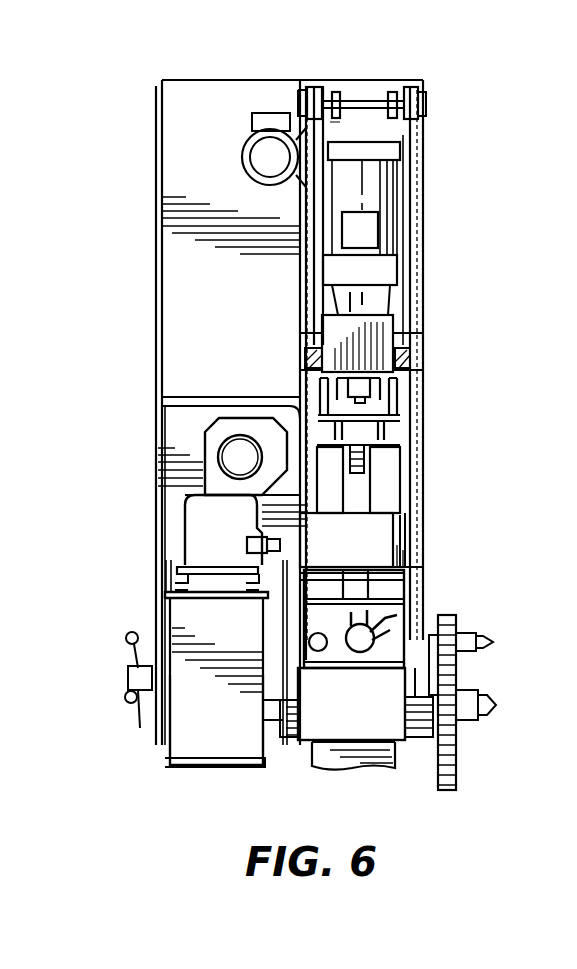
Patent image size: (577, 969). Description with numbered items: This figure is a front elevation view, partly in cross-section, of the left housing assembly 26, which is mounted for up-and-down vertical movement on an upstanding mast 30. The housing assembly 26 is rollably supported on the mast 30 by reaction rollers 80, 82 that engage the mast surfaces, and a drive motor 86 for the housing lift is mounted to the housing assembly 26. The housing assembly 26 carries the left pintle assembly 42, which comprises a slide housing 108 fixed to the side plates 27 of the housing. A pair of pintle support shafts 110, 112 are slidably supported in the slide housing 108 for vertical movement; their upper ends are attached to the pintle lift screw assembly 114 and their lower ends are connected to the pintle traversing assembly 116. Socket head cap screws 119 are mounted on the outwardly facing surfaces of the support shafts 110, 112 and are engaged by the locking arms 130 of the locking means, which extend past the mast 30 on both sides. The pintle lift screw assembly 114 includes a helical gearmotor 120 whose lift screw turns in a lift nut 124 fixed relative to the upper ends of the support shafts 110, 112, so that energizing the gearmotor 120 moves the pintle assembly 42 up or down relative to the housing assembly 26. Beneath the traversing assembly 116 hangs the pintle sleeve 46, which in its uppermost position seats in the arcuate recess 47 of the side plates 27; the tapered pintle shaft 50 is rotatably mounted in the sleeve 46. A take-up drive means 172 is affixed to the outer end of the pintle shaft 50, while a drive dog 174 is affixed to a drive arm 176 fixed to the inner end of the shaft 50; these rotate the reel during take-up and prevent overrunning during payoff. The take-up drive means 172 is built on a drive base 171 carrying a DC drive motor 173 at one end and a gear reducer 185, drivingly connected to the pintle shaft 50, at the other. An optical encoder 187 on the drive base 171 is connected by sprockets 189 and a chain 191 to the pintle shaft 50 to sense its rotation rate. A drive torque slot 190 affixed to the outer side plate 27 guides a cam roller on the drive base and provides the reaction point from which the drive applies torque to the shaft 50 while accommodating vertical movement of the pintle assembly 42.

The left housing assembly 26 is at (467, 292).
The side plates 27 is at (422, 240).
The mast 30 is at (392, 130).
The left pintle assembly 42 is at (477, 551).
The pintle sleeve 46 is at (350, 720).
The arcuate recess 47 is at (410, 682).
The pintle shaft 50 is at (488, 707).
The reaction roller 80 is at (360, 100).
The reaction roller 82 is at (310, 88).
The drive motor 86 is at (242, 158).
The slide housing 108 is at (400, 528).
The pintle support shaft 110 is at (317, 490).
The pintle support shaft 112 is at (385, 492).
The pintle lift screw assembly 114 is at (489, 347).
The pintle traversing assembly 116 is at (408, 600).
The socket head cap screw 119 is at (405, 452).
The helical gearmotor 120 is at (370, 192).
The lift nut 124 is at (372, 393).
The locking arm 130 is at (318, 410).
The drive base 171 is at (168, 583).
The take-up drive means 172 is at (115, 711).
The drive motor 173 is at (185, 495).
The drive dog 174 is at (468, 640).
The drive arm 176 is at (455, 760).
The gear reducer 185 is at (192, 765).
The optical encoder 187 is at (247, 533).
The sprockets 189 is at (262, 708).
The drive torque slot 190 is at (298, 580).
The chain 191 is at (280, 615).